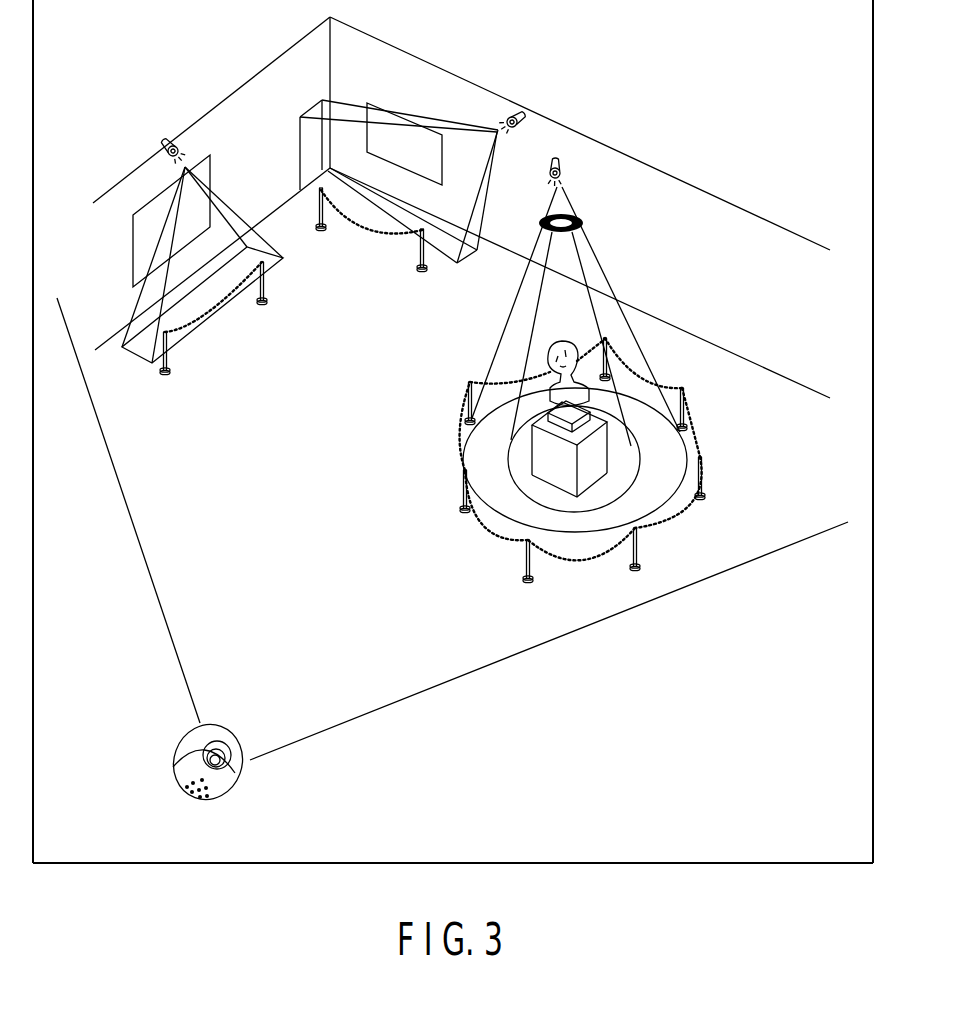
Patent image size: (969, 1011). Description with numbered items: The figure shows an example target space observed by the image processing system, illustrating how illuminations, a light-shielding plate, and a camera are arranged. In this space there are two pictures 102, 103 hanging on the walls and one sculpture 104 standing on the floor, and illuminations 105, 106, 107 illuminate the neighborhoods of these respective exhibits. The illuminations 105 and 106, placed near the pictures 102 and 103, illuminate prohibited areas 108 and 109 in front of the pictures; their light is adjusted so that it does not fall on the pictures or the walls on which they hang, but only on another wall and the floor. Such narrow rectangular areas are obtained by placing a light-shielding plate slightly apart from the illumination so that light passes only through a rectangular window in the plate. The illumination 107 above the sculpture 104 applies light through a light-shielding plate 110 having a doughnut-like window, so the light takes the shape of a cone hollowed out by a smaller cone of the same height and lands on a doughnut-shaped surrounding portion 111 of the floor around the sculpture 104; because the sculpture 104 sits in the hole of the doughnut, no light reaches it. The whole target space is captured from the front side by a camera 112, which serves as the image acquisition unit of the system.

The picture 102 is at (210, 167).
The picture 103 is at (372, 103).
The sculpture 104 is at (565, 343).
The illumination 105 is at (165, 137).
The illumination 106 is at (522, 110).
The illumination 107 is at (565, 172).
The prohibited area 108 is at (135, 354).
The prohibited area 109 is at (452, 259).
The light-shielding plate 110 is at (584, 222).
The surrounding portion 111 is at (512, 508).
The camera 112 is at (220, 800).